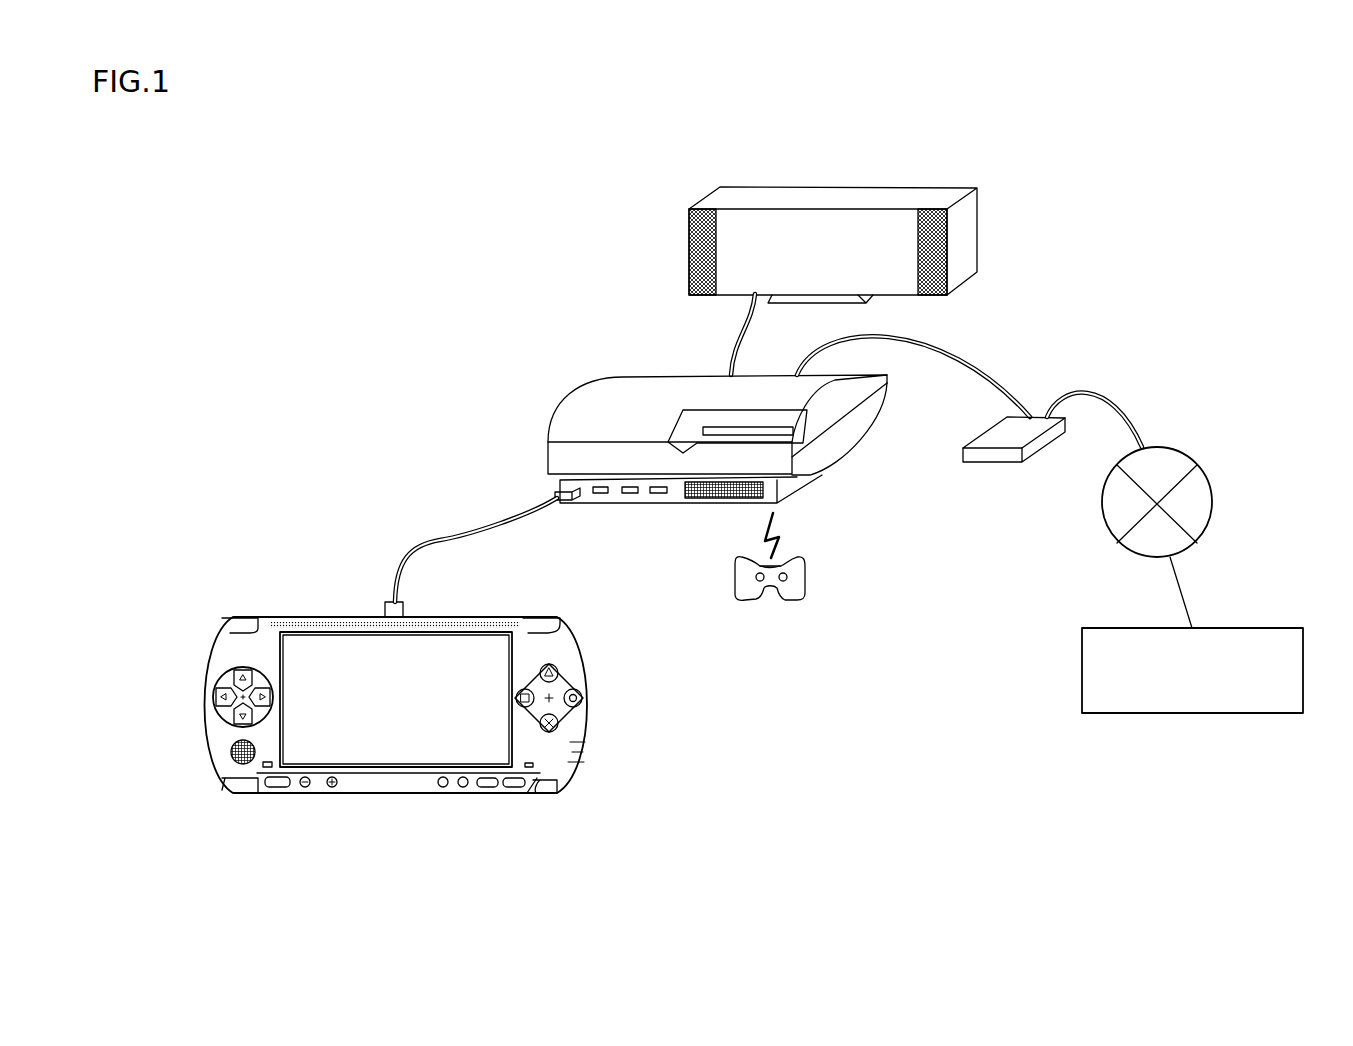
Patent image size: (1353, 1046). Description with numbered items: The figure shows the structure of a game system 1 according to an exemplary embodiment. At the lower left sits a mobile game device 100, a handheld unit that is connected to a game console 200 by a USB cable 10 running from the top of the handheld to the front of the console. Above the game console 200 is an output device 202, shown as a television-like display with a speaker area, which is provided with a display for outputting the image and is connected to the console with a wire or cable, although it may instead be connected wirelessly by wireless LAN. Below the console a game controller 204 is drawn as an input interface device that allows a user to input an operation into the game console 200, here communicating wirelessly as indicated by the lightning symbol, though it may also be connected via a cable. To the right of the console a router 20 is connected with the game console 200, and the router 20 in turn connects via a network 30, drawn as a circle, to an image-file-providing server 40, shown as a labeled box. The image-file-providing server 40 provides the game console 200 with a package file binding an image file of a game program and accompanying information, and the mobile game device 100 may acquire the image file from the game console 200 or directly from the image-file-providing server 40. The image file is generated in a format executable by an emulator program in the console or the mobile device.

The game system 1 is at (760, 866).
The USB cable 10 is at (429, 545).
The router 20 is at (997, 436).
The network 30 is at (1203, 468).
The image-file-providing server 40 is at (1250, 628).
The mobile game device 100 is at (577, 663).
The game console 200 is at (835, 449).
The output device 202 is at (853, 196).
The game controller 204 is at (799, 582).